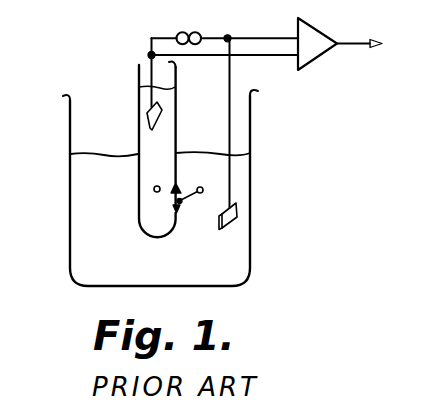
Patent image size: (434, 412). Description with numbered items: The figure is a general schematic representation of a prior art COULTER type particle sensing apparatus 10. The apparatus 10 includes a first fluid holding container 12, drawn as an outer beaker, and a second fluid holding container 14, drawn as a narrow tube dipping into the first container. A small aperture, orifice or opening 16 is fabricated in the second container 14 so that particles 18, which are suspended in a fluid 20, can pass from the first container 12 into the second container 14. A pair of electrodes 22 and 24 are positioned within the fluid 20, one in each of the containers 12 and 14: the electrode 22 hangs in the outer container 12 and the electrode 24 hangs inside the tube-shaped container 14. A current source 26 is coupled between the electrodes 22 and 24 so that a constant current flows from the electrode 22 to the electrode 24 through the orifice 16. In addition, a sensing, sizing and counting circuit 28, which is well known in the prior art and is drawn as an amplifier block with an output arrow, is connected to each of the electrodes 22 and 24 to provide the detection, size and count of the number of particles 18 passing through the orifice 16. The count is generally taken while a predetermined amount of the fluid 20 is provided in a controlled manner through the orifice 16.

The particle sensing apparatus 10 is at (137, 54).
The first fluid holding container 12 is at (70, 124).
The second fluid holding container 14 is at (138, 87).
The orifice 16 is at (173, 199).
The particles 18 is at (158, 186).
The fluid 20 is at (92, 167).
The electrode 22 is at (228, 229).
The electrode 24 is at (157, 117).
The current source 26 is at (198, 32).
The sensing, sizing and counting circuit 28 is at (322, 30).